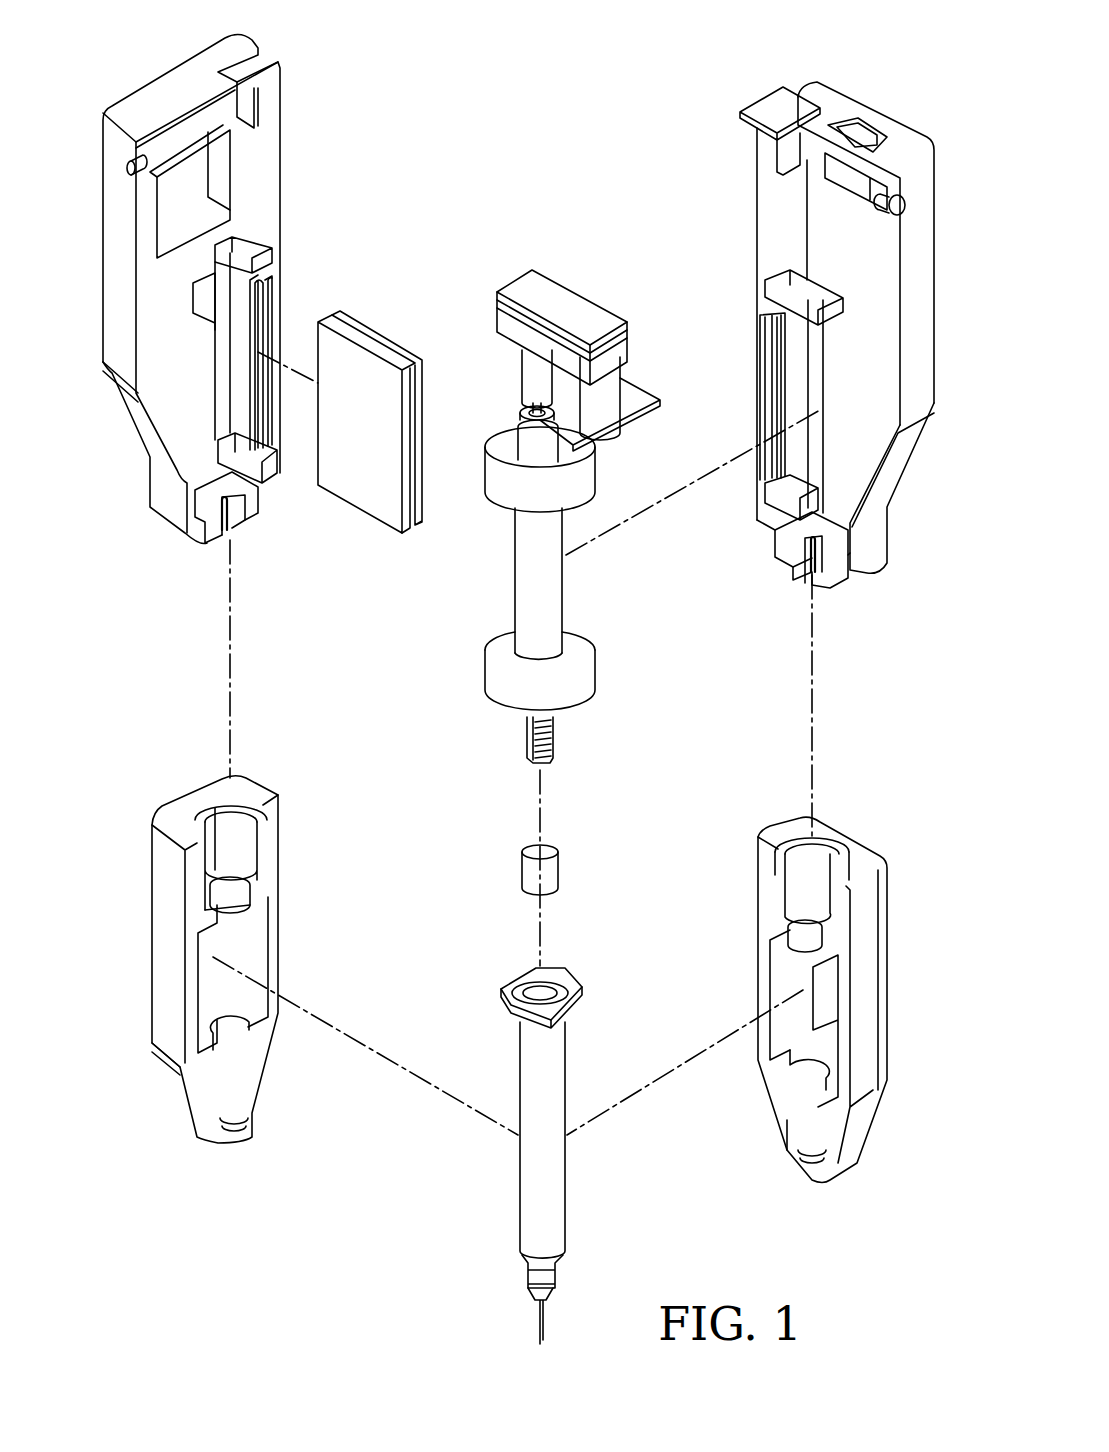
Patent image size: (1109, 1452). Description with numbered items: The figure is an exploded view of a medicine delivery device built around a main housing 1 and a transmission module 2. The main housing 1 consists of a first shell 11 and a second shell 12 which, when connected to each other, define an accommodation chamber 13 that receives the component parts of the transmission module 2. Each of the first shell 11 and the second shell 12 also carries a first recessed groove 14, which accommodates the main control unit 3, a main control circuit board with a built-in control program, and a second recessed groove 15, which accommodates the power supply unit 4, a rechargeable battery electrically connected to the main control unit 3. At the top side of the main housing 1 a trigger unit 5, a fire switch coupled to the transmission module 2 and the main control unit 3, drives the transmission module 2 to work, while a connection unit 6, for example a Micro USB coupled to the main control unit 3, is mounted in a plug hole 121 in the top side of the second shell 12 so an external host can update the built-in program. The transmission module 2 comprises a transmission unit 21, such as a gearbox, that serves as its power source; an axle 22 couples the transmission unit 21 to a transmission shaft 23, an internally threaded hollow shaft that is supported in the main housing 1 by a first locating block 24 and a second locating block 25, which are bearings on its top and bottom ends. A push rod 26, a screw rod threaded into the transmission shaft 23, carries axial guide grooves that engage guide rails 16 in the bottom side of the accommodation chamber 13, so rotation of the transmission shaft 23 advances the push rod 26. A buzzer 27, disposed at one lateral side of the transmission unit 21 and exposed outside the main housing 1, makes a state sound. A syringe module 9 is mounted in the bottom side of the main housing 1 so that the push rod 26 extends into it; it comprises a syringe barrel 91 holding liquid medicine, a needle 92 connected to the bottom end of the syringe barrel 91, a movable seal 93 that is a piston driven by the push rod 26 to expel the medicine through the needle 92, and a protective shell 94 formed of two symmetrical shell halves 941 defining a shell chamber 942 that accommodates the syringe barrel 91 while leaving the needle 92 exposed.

The main housing 1 is at (413, 58).
The first shell 11 is at (257, 288).
The second shell 12 is at (793, 311).
The plug hole 121 is at (850, 118).
The accommodation chamber 13 is at (222, 363).
The first recessed groove 14 is at (277, 277).
The second recessed groove 15 is at (272, 307).
The guide rail 16 is at (247, 523).
The transmission module 2 is at (582, 507).
The transmission unit 21 is at (580, 278).
The axle 22 is at (520, 410).
The transmission shaft 23 is at (545, 575).
The first locating block 24 is at (570, 495).
The second locating block 25 is at (575, 695).
The push rod 26 is at (582, 762).
The buzzer 27 is at (905, 207).
The main control unit 3 is at (370, 483).
The power supply unit 4 is at (398, 347).
The trigger unit 5 is at (763, 102).
The connection unit 6 is at (870, 128).
The syringe module 9 is at (190, 700).
The syringe barrel 91 is at (538, 1175).
The needle 92 is at (518, 1261).
The movable seal 93 is at (528, 865).
The protective shell 94 is at (170, 800).
The shell half 941 is at (250, 793).
The shell chamber 942 is at (245, 938).